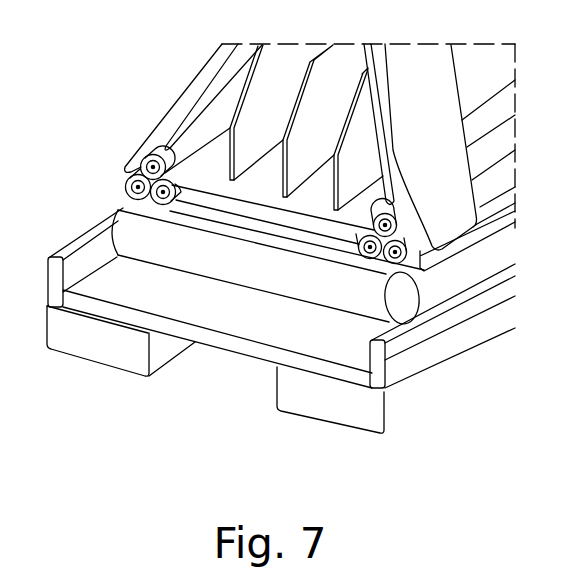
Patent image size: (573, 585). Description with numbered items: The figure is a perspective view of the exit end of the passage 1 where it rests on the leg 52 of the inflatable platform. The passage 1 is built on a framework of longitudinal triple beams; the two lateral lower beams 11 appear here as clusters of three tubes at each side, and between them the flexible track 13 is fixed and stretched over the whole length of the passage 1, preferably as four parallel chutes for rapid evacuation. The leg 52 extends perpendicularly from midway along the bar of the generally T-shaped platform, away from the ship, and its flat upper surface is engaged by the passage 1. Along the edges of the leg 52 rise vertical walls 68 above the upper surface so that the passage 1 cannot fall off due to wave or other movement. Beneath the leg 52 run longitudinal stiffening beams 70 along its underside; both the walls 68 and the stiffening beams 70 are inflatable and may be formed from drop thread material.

The passage 1 is at (150, 96).
The lateral lower beams 11 is at (116, 182).
The flexible track 13 is at (259, 201).
The leg 52 is at (277, 335).
The vertical walls 68 is at (92, 244).
The longitudinal stiffening beams 70 is at (92, 347).